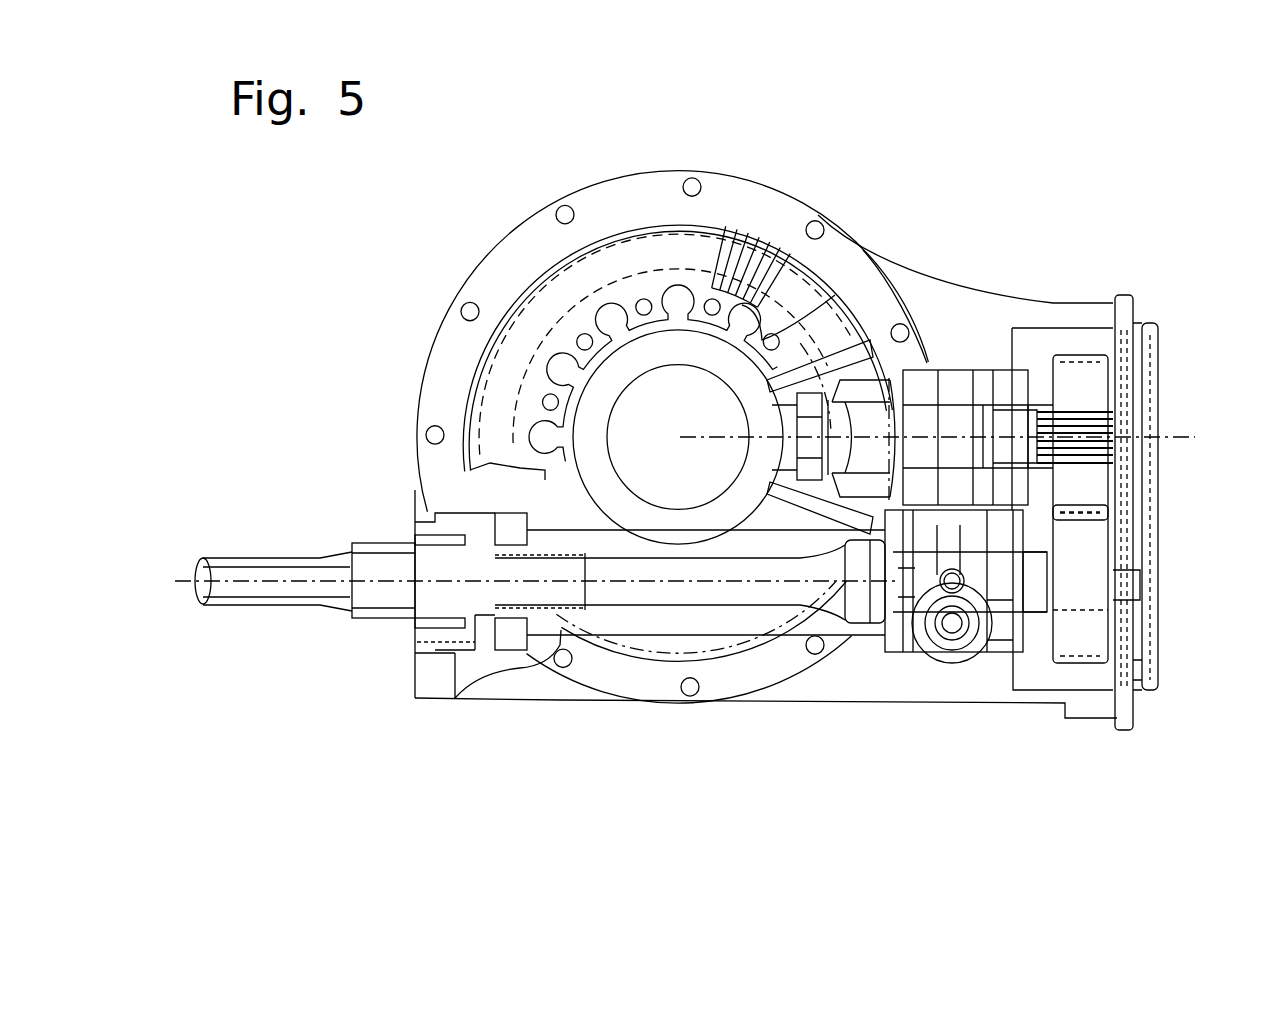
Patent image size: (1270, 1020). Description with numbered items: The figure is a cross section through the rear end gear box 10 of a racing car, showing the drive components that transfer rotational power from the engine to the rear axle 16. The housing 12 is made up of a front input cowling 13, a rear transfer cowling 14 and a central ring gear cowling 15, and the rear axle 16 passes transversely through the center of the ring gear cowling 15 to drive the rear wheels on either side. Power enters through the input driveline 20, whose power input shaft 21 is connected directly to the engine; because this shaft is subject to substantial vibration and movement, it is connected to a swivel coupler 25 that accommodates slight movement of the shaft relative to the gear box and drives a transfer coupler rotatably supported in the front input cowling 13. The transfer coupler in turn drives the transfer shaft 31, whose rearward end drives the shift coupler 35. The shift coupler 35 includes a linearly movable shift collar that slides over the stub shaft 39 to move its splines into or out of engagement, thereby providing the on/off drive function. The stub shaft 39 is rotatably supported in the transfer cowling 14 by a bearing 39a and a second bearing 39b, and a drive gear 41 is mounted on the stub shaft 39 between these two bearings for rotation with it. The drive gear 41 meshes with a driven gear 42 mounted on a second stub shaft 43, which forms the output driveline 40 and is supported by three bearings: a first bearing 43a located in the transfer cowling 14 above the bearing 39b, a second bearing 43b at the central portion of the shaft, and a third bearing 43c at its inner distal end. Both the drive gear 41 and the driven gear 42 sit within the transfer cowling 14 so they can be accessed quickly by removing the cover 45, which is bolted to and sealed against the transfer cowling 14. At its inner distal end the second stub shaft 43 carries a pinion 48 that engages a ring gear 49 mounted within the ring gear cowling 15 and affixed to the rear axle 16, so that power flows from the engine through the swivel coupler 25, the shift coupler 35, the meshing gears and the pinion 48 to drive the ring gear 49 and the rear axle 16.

The rear end gear box 10 is at (364, 280).
The housing 12 is at (440, 383).
The front input cowling 13 is at (438, 694).
The rear transfer cowling 14 is at (1090, 720).
The central ring gear cowling 15 is at (620, 193).
The rear axle 16 is at (657, 445).
The input driveline 20 is at (368, 653).
The power input shaft 21 is at (248, 568).
The swivel coupler 25 is at (391, 513).
The transfer shaft 31 is at (612, 600).
The shift coupler 35 is at (868, 650).
The stub shaft 39 is at (1043, 592).
The bearing 39a is at (1003, 637).
The second bearing 39b is at (1150, 670).
The output driveline 40 is at (930, 316).
The drive gear 41 is at (1074, 637).
The driven gear 42 is at (1080, 375).
The second stub shaft 43 is at (1003, 300).
The first bearing 43a is at (1150, 500).
The second bearing 43b is at (1006, 384).
The third bearing 43c is at (770, 398).
The cover 45 is at (1150, 350).
The pinion 48 is at (860, 410).
The ring gear 49 is at (857, 330).